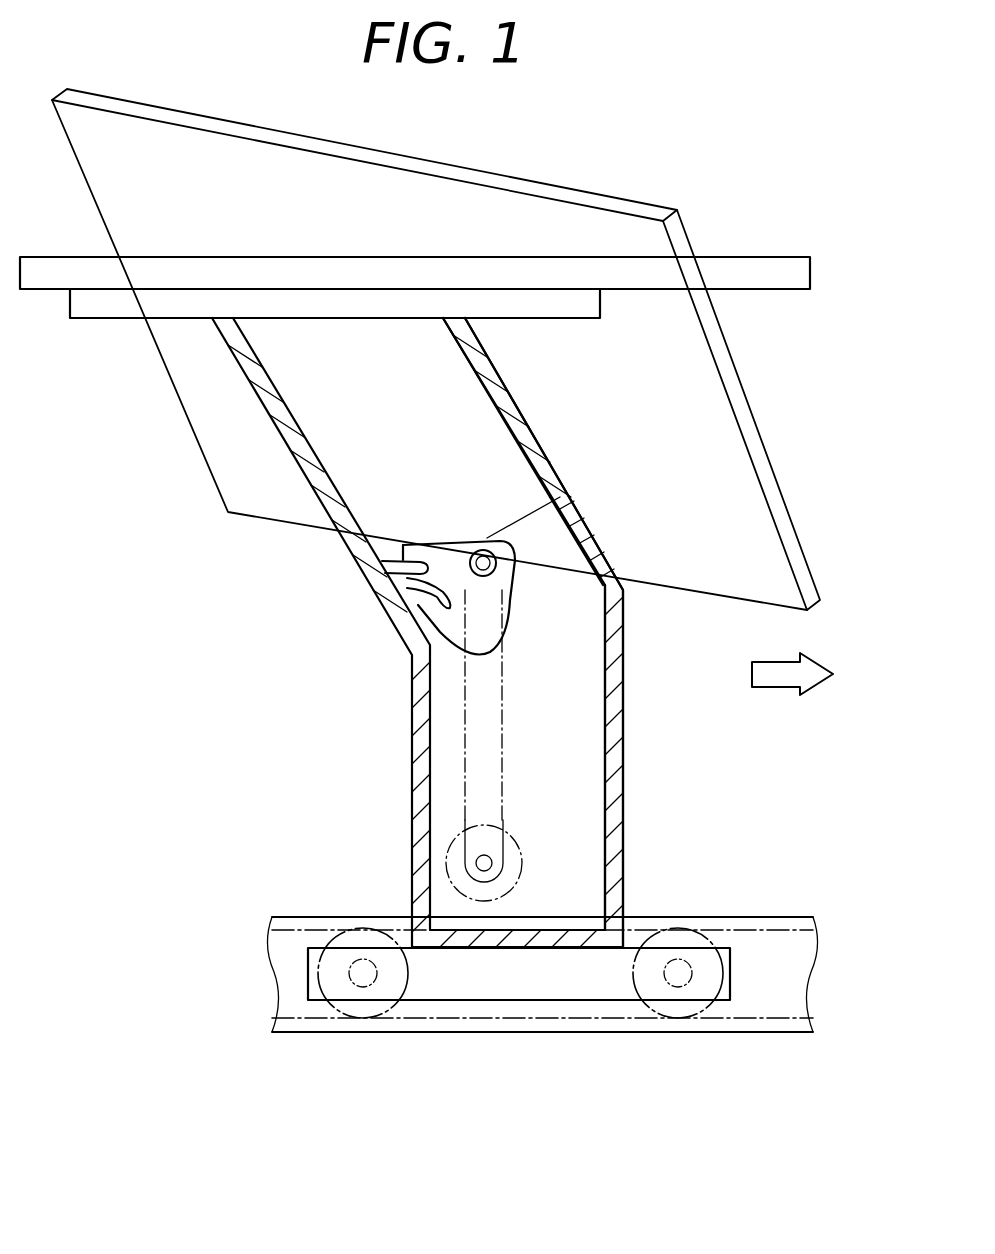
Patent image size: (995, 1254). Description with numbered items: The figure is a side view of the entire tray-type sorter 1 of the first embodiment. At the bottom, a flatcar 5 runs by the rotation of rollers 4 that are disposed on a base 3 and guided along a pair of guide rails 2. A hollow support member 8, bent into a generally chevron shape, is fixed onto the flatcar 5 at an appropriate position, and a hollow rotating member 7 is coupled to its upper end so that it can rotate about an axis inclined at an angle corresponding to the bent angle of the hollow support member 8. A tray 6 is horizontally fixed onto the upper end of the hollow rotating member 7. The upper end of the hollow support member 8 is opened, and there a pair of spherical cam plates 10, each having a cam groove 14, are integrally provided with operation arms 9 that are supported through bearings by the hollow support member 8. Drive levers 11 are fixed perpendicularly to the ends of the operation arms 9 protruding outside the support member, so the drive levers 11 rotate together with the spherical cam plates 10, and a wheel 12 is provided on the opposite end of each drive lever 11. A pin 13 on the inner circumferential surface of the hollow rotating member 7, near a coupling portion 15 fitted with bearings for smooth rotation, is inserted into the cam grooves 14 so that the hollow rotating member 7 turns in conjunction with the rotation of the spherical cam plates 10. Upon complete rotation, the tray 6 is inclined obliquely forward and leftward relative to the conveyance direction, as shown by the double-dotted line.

The sorter 1 is at (300, 556).
The guide rails 2 is at (763, 940).
The base 3 is at (437, 978).
The rollers 4 is at (355, 1010).
The flatcar 5 is at (379, 894).
The tray 6 is at (302, 257).
The hollow rotating member 7 is at (505, 378).
The hollow support member 8 is at (625, 638).
The operation arms 9 is at (483, 563).
The spherical cam plates 10 is at (437, 625).
The drive levers 11 is at (502, 735).
The wheel 12 is at (523, 868).
The pin 13 is at (410, 566).
The cam groove 14 is at (398, 604).
The coupling portion 15 is at (573, 489).